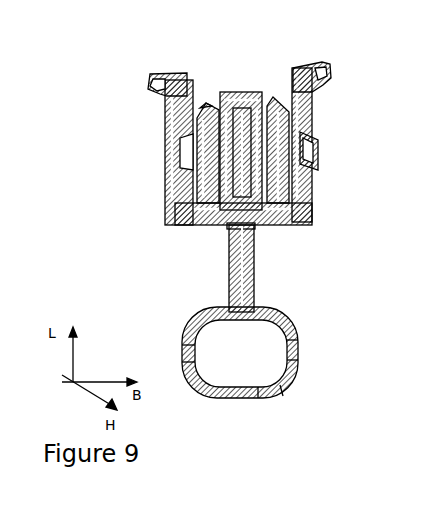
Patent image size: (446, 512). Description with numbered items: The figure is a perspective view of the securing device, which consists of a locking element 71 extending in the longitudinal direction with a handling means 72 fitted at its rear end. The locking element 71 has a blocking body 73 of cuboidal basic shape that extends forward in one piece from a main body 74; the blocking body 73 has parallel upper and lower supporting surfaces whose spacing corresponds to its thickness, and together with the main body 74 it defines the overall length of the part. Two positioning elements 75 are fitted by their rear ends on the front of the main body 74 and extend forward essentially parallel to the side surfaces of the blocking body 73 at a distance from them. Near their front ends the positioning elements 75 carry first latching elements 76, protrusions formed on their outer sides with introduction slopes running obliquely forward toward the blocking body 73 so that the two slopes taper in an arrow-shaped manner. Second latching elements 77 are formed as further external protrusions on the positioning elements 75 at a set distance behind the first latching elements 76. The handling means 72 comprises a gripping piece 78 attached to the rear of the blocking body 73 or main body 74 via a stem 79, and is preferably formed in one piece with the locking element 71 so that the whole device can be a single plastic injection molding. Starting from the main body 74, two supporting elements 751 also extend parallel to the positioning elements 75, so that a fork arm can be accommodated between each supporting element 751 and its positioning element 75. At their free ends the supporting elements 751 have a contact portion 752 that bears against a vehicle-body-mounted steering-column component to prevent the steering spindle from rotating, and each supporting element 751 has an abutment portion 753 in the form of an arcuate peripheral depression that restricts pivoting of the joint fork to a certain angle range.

The locking element 71 is at (138, 171).
The handling means 72 is at (308, 315).
The blocking body 73 is at (243, 127).
The main body 74 is at (178, 260).
The positioning element 75 is at (165, 184).
The first latching element 76 is at (205, 104).
The second latching element 77 is at (207, 233).
The gripping piece 78 is at (278, 383).
The stem 79 is at (243, 262).
The supporting element 751 is at (165, 112).
The contact portion 752 is at (148, 93).
The abutment portion 753 is at (167, 132).